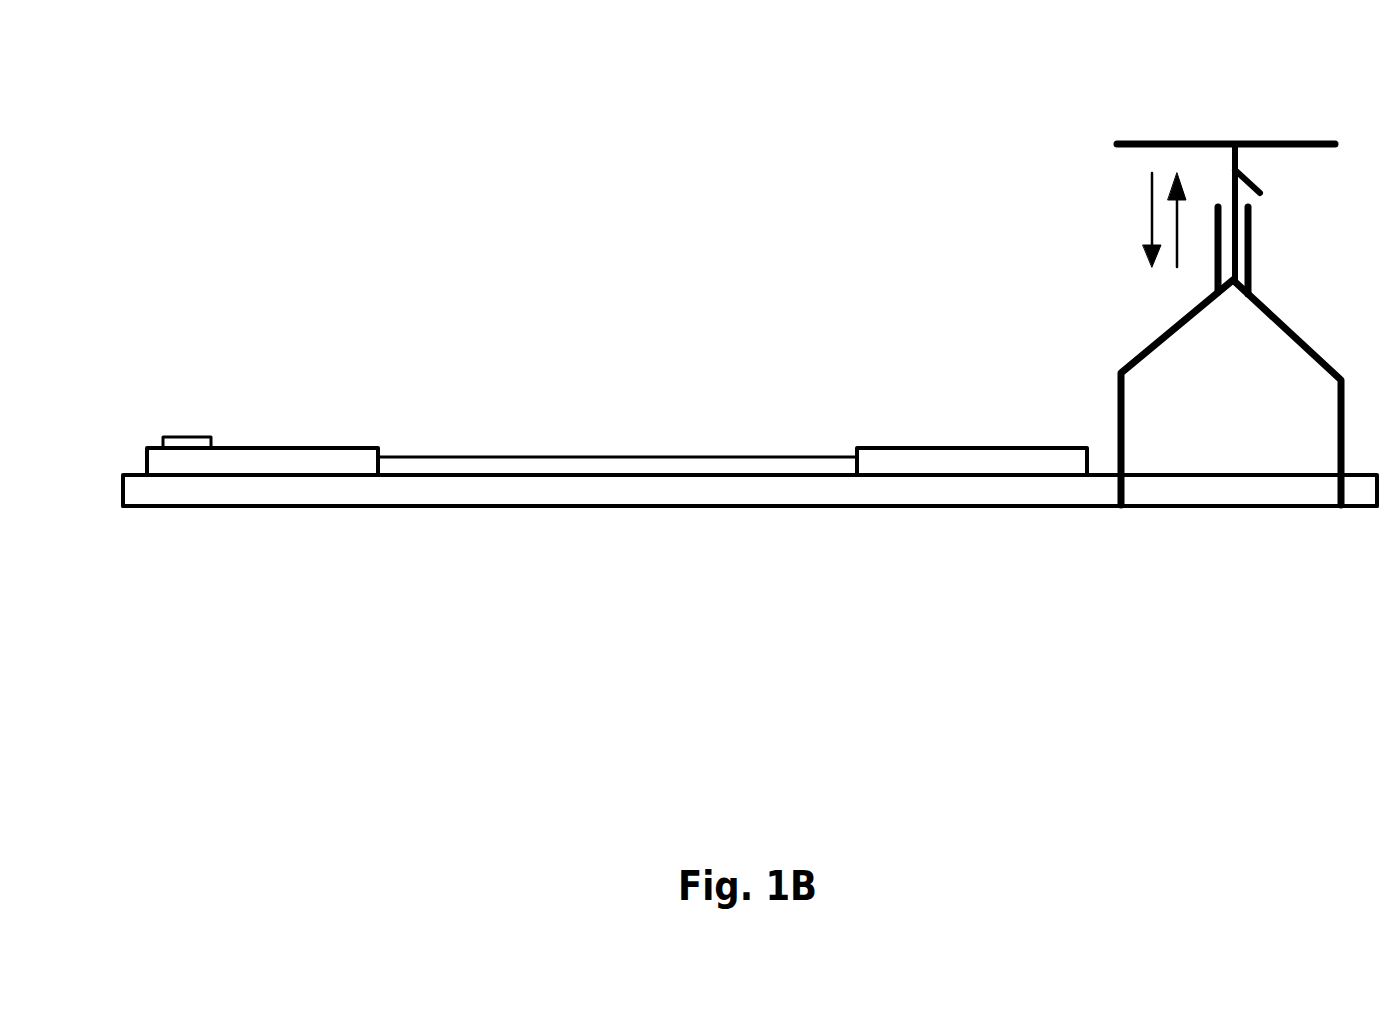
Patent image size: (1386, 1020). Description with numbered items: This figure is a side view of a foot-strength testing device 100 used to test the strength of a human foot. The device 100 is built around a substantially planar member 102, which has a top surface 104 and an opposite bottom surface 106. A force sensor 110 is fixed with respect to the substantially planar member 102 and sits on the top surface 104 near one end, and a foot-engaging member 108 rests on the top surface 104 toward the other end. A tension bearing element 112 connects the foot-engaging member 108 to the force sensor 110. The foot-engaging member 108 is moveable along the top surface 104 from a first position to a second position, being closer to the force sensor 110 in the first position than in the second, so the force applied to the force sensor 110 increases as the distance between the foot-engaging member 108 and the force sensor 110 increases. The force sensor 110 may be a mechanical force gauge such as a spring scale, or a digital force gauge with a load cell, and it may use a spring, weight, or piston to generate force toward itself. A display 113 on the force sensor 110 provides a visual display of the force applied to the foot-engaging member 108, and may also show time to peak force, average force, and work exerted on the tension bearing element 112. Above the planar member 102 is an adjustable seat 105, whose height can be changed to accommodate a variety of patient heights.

The foot-strength testing device 100 is at (763, 275).
The substantially planar member 102 is at (123, 490).
The top surface 104 is at (1157, 475).
The adjustable seat 105 is at (1238, 120).
The bottom surface 106 is at (960, 507).
The foot-engaging member 108 is at (925, 448).
The force sensor 110 is at (335, 449).
The tension bearing element 112 is at (633, 457).
The display 113 is at (190, 437).